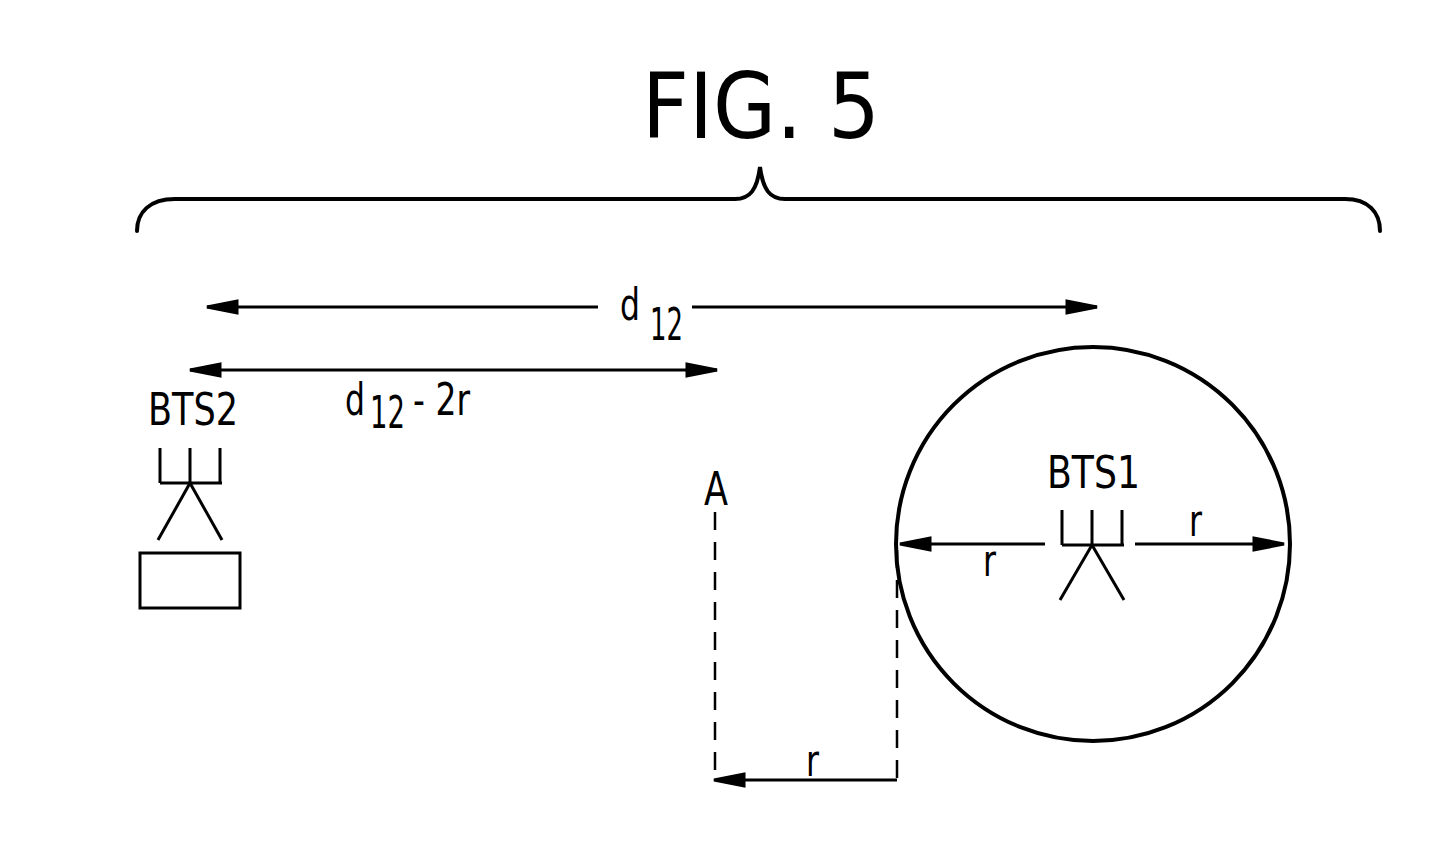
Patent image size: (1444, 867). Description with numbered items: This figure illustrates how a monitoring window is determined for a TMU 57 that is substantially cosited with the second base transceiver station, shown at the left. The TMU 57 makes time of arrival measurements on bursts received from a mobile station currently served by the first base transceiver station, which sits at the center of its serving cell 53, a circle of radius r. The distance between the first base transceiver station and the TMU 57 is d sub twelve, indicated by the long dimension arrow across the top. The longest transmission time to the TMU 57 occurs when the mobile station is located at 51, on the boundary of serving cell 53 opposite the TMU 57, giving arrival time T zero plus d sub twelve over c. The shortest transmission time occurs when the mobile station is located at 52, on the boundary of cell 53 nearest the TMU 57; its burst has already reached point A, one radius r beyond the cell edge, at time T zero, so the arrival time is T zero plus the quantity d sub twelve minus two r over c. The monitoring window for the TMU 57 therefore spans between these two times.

The mobile station location on far cell boundary 51 is at (1320, 543).
The mobile station location on near cell boundary 52 is at (870, 543).
The serving cell 53 is at (1165, 685).
The TMU 57 is at (240, 580).